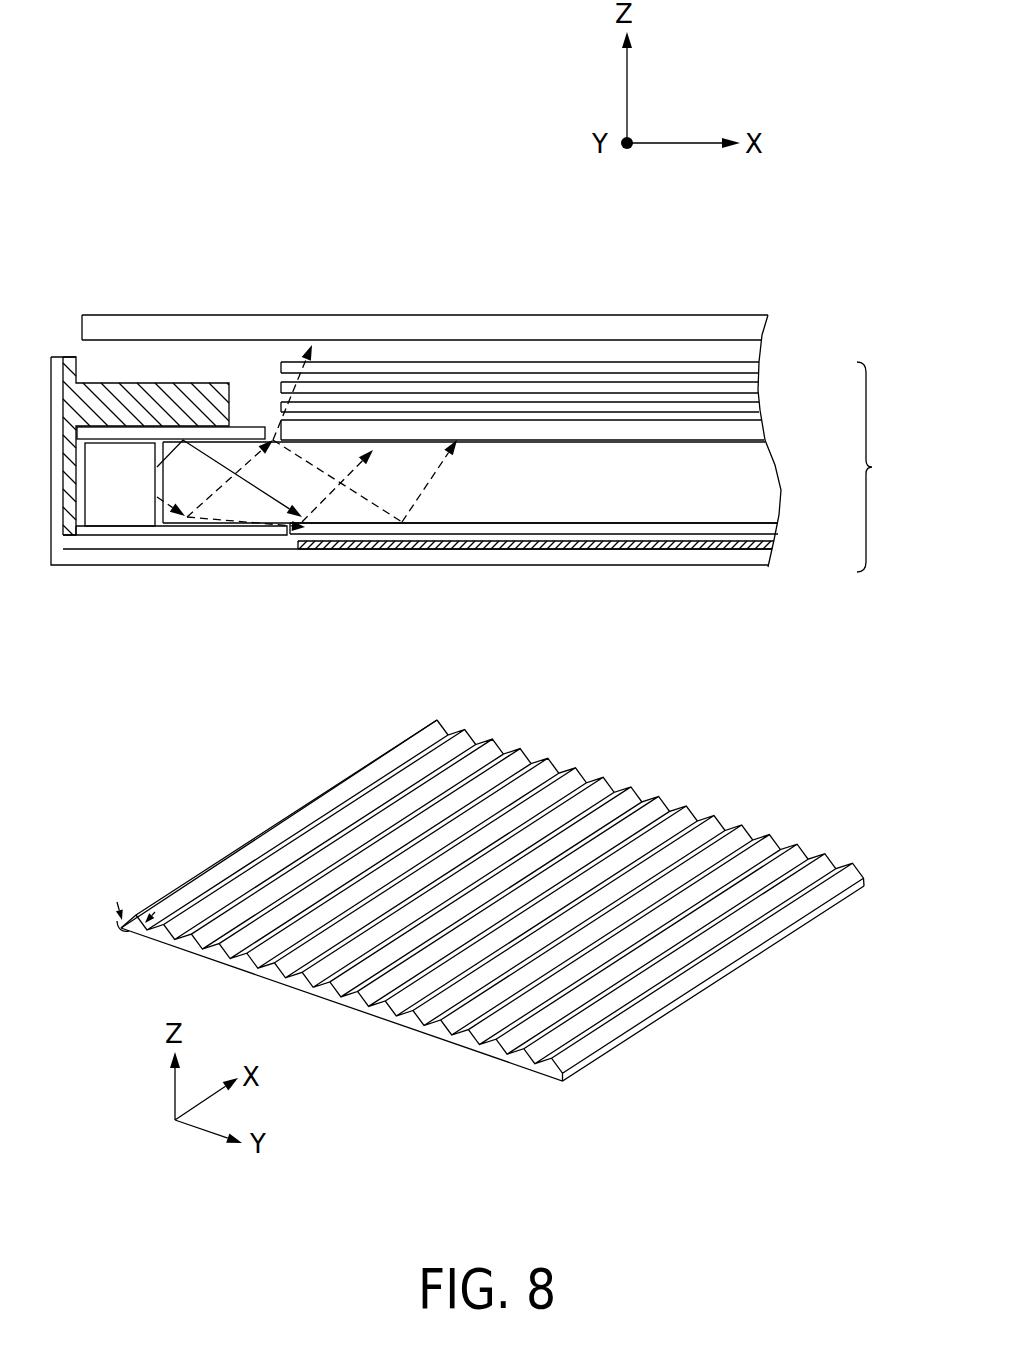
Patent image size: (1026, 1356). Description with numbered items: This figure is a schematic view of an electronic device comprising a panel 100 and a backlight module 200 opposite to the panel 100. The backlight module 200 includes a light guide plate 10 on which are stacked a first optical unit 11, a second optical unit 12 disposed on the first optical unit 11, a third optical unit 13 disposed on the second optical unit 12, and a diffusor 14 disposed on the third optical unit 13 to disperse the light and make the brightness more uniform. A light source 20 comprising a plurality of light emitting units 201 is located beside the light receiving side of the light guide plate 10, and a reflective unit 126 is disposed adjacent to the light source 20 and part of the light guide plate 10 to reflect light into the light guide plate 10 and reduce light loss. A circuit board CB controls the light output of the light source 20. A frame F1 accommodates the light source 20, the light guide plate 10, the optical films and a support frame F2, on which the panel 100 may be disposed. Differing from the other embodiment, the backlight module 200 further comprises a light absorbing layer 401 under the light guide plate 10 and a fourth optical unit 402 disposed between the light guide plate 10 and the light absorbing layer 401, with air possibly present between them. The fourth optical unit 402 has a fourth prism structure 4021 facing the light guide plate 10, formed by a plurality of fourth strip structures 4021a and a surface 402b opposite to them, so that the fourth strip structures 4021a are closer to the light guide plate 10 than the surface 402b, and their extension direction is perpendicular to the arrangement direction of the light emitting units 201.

The panel 100 is at (762, 333).
The diffusor 14 is at (756, 368).
The third optical unit 13 is at (755, 388).
The second optical unit 12 is at (758, 404).
The first optical unit 11 is at (765, 427).
The light guide plate 10 is at (672, 500).
The backlight module 200 is at (896, 467).
The fourth optical unit 402 is at (768, 536).
The light absorbing layer 401 is at (768, 549).
The frame F1 is at (60, 557).
The support frame F2 is at (95, 393).
The reflective unit 126 is at (165, 433).
The light source 20 is at (120, 532).
The light emitting unit 201 is at (112, 490).
The circuit board CB is at (225, 536).
The fourth prism structure 4021 is at (492, 900).
The fourth strip structures 4021a is at (678, 830).
The surface 402b is at (476, 1054).